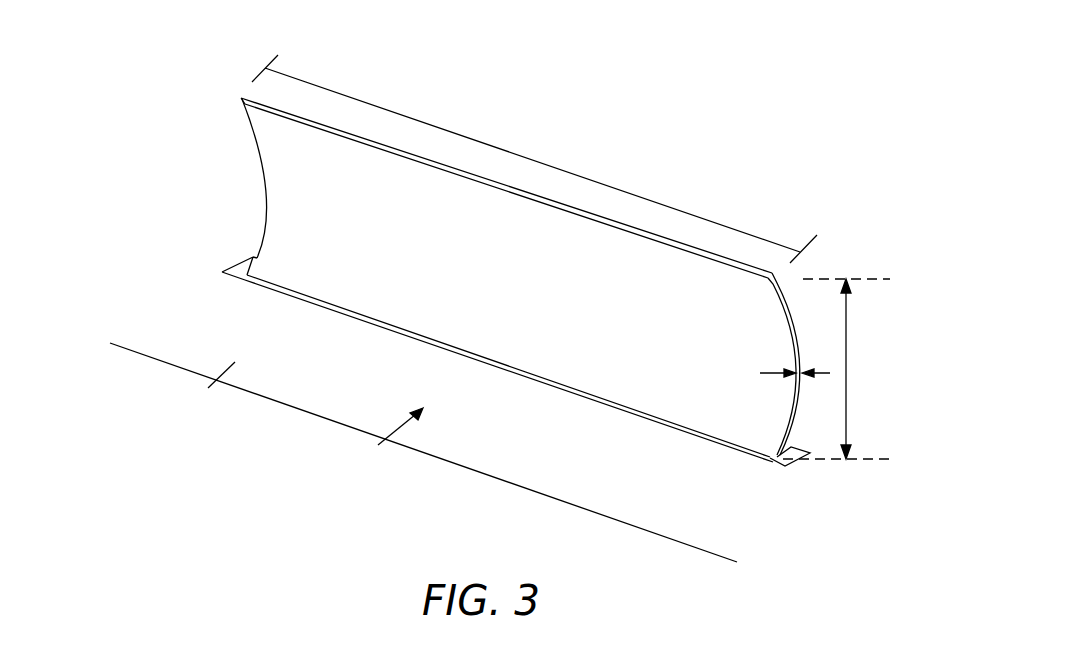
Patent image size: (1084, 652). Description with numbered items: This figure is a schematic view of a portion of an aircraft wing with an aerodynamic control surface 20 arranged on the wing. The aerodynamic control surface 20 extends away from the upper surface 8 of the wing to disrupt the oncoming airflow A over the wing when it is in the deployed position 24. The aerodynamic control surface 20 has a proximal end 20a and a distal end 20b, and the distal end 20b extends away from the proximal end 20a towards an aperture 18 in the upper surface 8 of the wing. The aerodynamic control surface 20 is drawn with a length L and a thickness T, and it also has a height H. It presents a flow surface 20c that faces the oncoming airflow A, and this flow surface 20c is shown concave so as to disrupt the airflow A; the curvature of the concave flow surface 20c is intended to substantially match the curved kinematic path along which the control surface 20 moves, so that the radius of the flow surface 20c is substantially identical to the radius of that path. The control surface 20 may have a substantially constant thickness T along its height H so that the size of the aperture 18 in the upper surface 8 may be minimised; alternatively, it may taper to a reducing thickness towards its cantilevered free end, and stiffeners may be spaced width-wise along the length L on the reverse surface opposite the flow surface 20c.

The upper surface 8 is at (423, 452).
The aperture 18 is at (250, 262).
The aerodynamic control surface 20 is at (475, 291).
The proximal end 20a is at (738, 440).
The distal end 20b is at (243, 97).
The flow surface 20c is at (280, 243).
The deployed position 24 is at (690, 182).
The oncoming airflow A is at (388, 448).
The length L is at (534, 159).
The height H is at (836, 369).
The thickness T is at (795, 355).